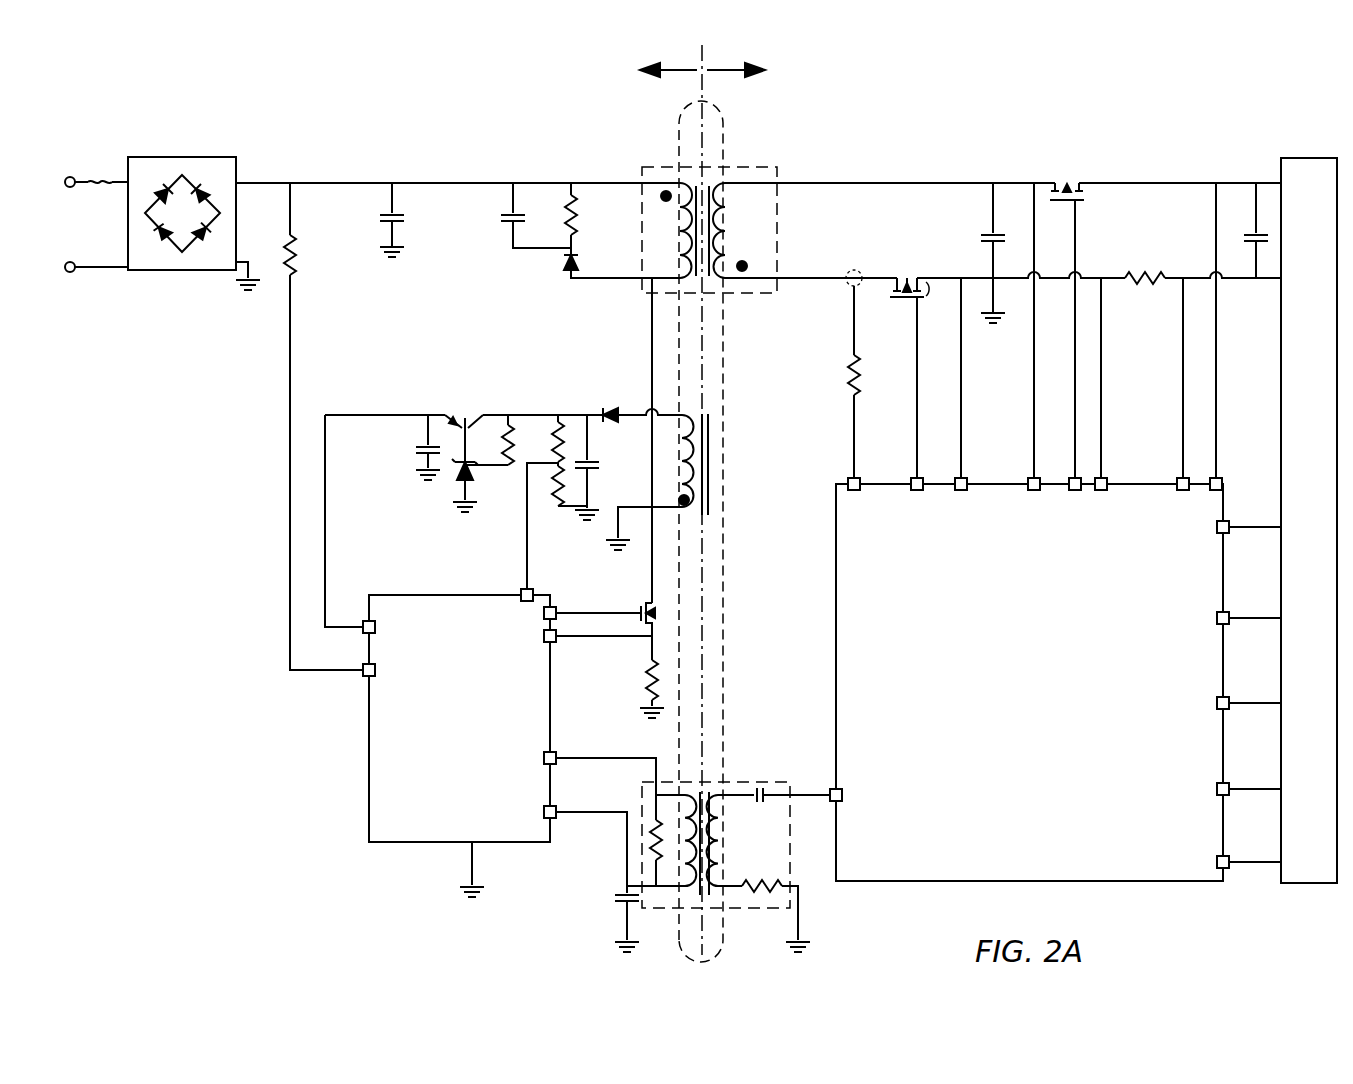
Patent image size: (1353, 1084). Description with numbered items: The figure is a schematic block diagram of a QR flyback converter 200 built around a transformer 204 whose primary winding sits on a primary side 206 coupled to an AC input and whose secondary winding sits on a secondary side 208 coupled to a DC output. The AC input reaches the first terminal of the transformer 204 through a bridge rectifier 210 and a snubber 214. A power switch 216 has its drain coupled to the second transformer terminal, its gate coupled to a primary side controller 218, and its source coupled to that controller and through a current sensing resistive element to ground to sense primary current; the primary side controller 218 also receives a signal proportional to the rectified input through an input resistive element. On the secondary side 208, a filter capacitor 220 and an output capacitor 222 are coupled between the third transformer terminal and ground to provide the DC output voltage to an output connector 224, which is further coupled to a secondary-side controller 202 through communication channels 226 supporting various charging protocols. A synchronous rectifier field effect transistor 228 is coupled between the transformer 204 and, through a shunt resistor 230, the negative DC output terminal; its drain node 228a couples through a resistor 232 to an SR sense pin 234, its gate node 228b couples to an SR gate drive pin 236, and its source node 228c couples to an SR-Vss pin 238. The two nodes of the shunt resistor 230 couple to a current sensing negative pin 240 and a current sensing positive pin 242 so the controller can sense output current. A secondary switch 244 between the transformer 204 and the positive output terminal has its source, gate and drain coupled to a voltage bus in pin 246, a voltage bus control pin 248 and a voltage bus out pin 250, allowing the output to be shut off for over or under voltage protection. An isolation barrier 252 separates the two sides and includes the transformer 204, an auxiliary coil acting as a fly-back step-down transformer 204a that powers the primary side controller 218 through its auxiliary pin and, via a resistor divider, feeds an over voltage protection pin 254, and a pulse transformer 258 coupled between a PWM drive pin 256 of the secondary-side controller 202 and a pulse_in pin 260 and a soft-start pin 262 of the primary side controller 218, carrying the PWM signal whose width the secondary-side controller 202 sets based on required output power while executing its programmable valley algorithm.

The QR flyback converter 200 is at (112, 62).
The secondary-side controller 202 is at (1050, 710).
The transformer 204 is at (642, 170).
The fly-back step-down transformer 204a is at (692, 522).
The primary side 206 is at (669, 63).
The secondary side 208 is at (736, 63).
The bridge rectifier 210 is at (185, 157).
The snubber 214 is at (390, 162).
The power switch 216 is at (664, 626).
The primary side controller 218 is at (487, 748).
The filter capacitor 220 is at (989, 234).
The output capacitor 222 is at (1256, 232).
The output connector 224 is at (1304, 628).
The communication channels 226 is at (1252, 498).
The synchronous rectifier field effect transistor 228 is at (922, 263).
The drain node 228a is at (856, 270).
The gate node 228b is at (909, 299).
The source node 228c is at (947, 299).
The shunt resistor 230 is at (1158, 273).
The resistor 232 is at (852, 362).
The SR sense pin 234 is at (849, 478).
The SR gate drive pin 236 is at (912, 478).
The SR-Vss pin 238 is at (966, 478).
The current sensing negative pin 240 is at (1104, 479).
The current sensing positive pin 242 is at (1182, 478).
The secondary switch 244 is at (1058, 216).
The voltage bus in pin 246 is at (1032, 478).
The voltage bus control pin 248 is at (1072, 478).
The voltage bus out pin 250 is at (1214, 477).
The isolation barrier 252 is at (724, 362).
The OVP_AUX pin 254 is at (524, 605).
The PWM drive pin 256 is at (834, 788).
The pulse transformer 258 is at (770, 777).
The pulse_in pin 260 is at (544, 766).
The soft-start pin 262 is at (542, 818).